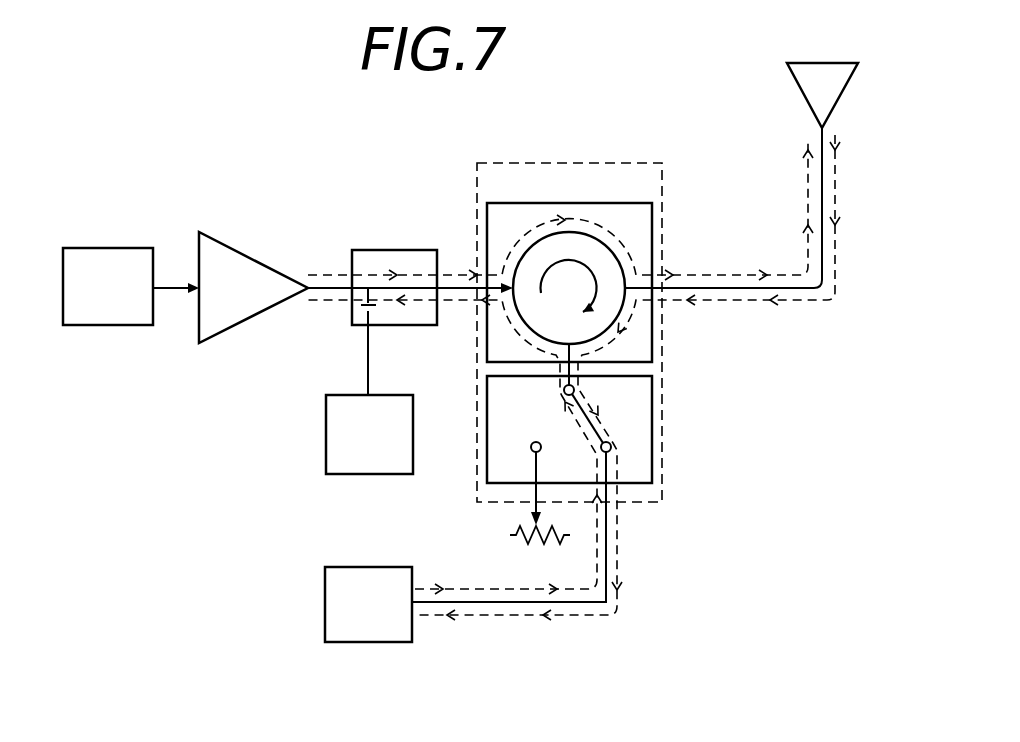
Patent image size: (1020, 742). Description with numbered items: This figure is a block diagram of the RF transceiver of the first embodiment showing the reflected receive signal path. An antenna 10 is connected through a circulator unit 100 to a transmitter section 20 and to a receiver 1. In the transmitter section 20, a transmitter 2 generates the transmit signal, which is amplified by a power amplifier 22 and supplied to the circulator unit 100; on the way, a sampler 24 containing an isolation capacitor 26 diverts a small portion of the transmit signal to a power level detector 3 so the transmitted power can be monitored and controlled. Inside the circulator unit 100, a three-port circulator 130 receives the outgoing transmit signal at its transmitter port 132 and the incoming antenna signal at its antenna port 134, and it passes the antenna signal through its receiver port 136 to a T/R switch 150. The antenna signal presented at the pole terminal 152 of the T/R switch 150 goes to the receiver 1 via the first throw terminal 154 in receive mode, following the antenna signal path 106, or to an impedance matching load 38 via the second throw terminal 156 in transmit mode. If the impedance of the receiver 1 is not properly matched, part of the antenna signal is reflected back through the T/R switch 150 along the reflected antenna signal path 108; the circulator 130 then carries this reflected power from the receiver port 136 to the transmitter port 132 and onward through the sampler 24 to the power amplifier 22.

The receiver 1 is at (355, 567).
The transmitter 2 is at (107, 248).
The power level detector 3 is at (326, 423).
The antenna 10 is at (814, 129).
The transmitter section 20 is at (302, 232).
The power amplifier 22 is at (221, 240).
The sampler 24 is at (372, 250).
The isolation capacitor 26 is at (366, 312).
The impedance matching load 38 is at (507, 535).
The circulator unit 100 is at (662, 200).
The antenna signal path 106 is at (745, 303).
The reflected antenna signal path 108 is at (470, 589).
The three-port circulator 130 is at (487, 220).
The transmitter port 132 is at (484, 301).
The antenna port 134 is at (658, 284).
The receiver port 136 is at (582, 356).
The T/R switch 150 is at (652, 425).
The pole terminal 152 is at (578, 390).
The first throw terminal 154 is at (530, 447).
The second throw terminal 156 is at (612, 447).